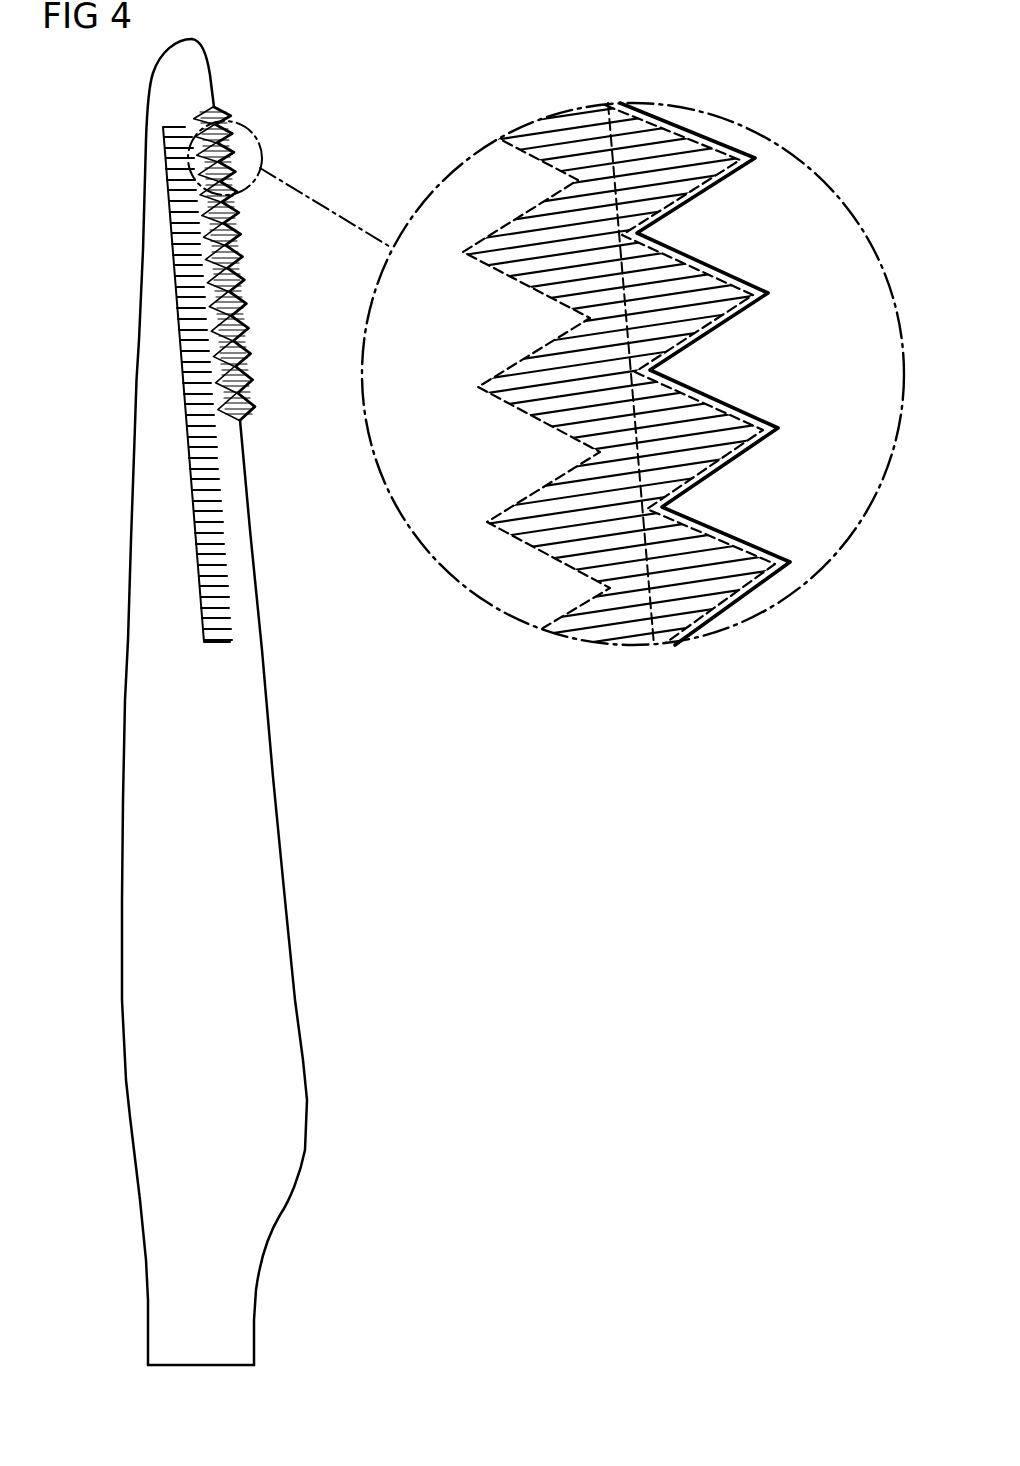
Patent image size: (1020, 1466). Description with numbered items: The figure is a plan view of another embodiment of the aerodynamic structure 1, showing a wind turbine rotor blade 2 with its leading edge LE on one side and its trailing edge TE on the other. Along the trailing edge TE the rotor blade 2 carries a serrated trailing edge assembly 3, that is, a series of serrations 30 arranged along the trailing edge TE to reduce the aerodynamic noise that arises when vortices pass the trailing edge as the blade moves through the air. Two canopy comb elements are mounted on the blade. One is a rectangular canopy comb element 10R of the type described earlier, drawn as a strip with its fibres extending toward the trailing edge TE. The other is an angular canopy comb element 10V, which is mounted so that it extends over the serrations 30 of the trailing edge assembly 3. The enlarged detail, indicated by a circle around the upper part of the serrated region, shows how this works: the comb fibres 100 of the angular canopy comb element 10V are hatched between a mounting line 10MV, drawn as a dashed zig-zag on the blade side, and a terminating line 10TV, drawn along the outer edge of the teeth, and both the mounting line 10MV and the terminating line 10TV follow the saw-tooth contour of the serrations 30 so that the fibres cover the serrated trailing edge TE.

The aerodynamic structure 1 is at (382, 97).
The rotor blade 2 is at (95, 657).
The serrated trailing edge assembly 3 is at (282, 300).
The serrations 30 is at (238, 226).
The comb fibres 100 is at (695, 288).
The angular canopy comb element 10V is at (253, 383).
The rectangular canopy comb element 10R is at (218, 642).
The mounting line 10MV is at (578, 460).
The terminating line 10TV is at (745, 543).
The trailing edge TE is at (270, 738).
The leading edge LE is at (120, 745).